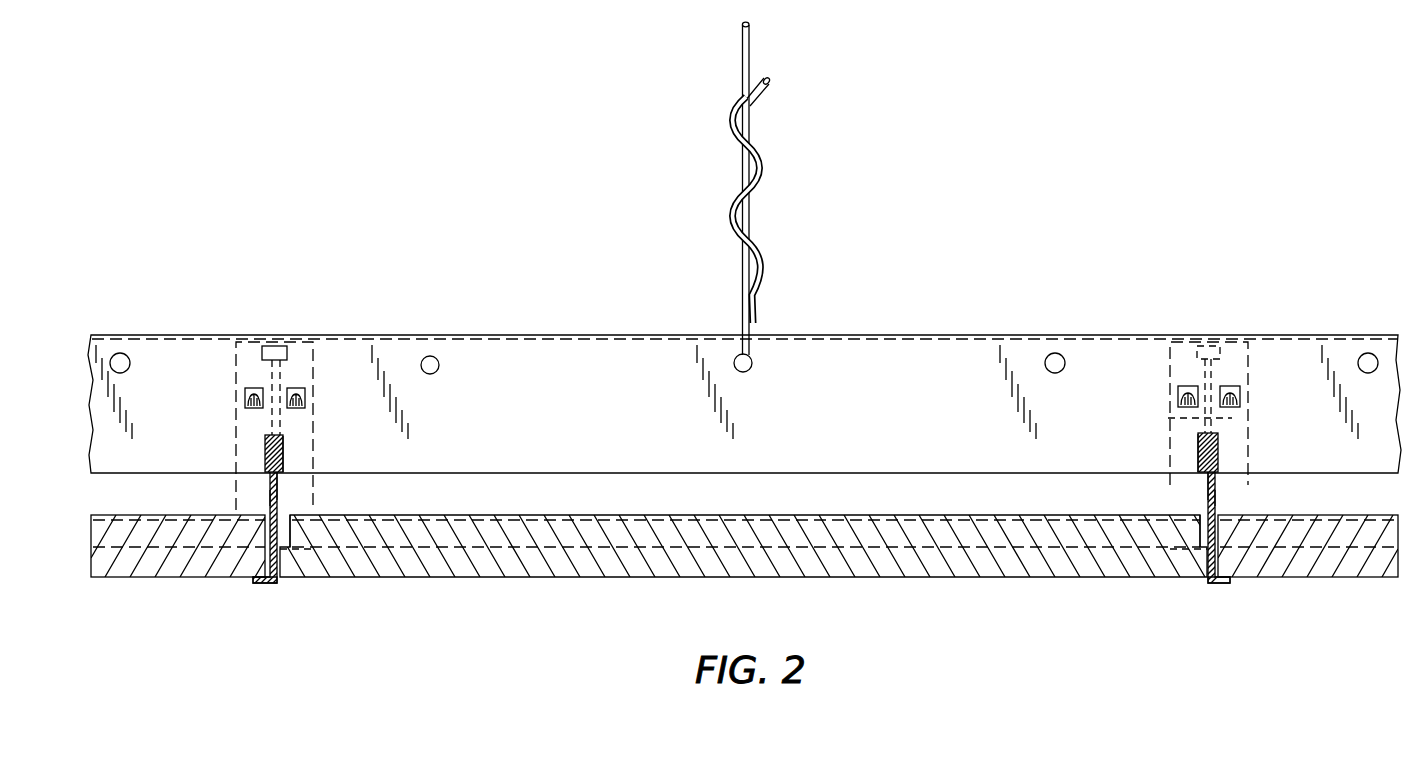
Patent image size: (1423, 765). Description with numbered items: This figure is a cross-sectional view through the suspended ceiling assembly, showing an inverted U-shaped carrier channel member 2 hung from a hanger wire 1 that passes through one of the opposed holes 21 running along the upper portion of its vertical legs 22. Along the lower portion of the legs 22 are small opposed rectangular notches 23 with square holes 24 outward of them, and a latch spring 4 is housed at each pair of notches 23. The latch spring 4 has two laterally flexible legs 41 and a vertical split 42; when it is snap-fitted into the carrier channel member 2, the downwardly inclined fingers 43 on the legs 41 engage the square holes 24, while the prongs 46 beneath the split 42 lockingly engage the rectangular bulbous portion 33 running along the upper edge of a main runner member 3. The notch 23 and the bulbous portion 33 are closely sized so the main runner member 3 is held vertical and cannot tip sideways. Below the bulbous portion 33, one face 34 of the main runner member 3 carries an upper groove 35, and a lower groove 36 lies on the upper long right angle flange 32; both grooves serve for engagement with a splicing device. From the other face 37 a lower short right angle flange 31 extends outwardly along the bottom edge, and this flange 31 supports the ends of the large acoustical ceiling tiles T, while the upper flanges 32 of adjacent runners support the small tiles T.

The hanger wire 1 is at (770, 206).
The carrier channel member 2 is at (596, 325).
The main runner member 3 is at (260, 483).
The latch spring 4 is at (320, 368).
The holes 21 is at (440, 367).
The vertical legs 22 is at (620, 422).
The small rectangular notches 23 is at (265, 452).
The square holes 24 is at (253, 408).
The lower short right angle flange 31 is at (263, 583).
The upper long right angle flange 32 is at (298, 553).
The rectangular bulbous portion 33 is at (283, 440).
The face 34 is at (279, 494).
The upper groove 35 is at (280, 482).
The lower groove 36 is at (289, 533).
The other face 37 is at (268, 500).
The legs 41 is at (1168, 420).
The vertical split 42 is at (1215, 376).
The fingers 43 is at (296, 388).
The prongs 46 is at (1198, 452).
The ceiling tiles T is at (519, 592).